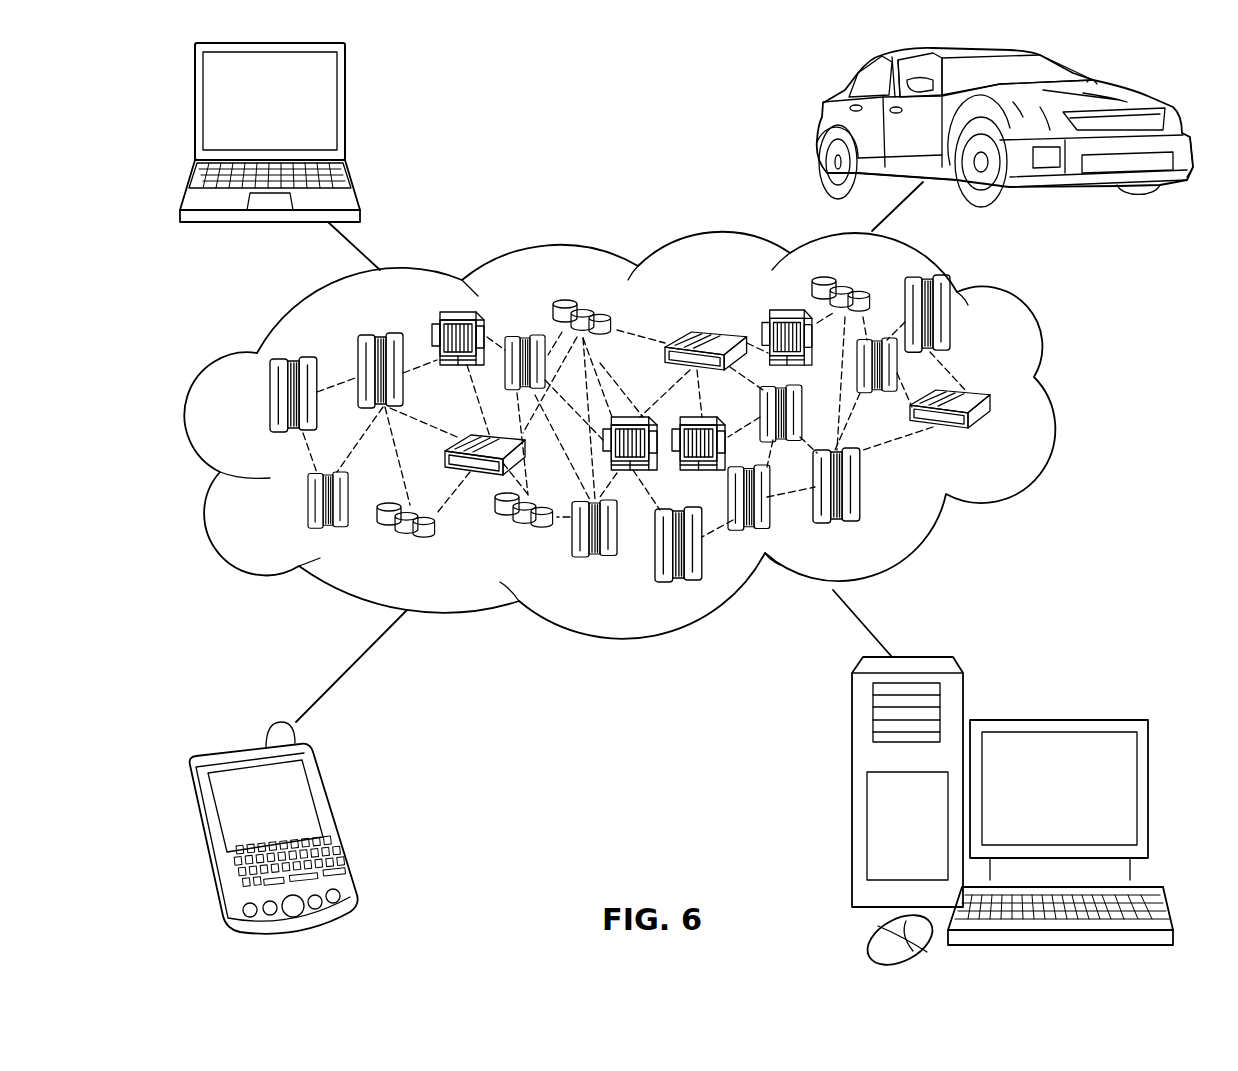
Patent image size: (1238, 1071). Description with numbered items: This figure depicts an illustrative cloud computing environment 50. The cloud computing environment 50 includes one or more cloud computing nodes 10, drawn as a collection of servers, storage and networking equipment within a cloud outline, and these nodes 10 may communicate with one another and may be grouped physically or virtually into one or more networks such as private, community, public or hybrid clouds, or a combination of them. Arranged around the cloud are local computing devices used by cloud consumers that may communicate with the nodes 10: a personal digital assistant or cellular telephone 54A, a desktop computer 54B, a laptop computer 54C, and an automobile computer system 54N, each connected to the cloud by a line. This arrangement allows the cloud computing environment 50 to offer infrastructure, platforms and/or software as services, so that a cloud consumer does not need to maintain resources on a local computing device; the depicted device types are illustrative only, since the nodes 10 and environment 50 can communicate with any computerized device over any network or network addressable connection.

The cloud computing environment 50 is at (1055, 405).
The cloud computing nodes 10 is at (997, 439).
The personal digital assistant (PDA) or cellular telephone 54A is at (334, 821).
The desktop computer 54B is at (1057, 720).
The laptop computer 54C is at (348, 108).
The automobile computer system 54N is at (820, 126).